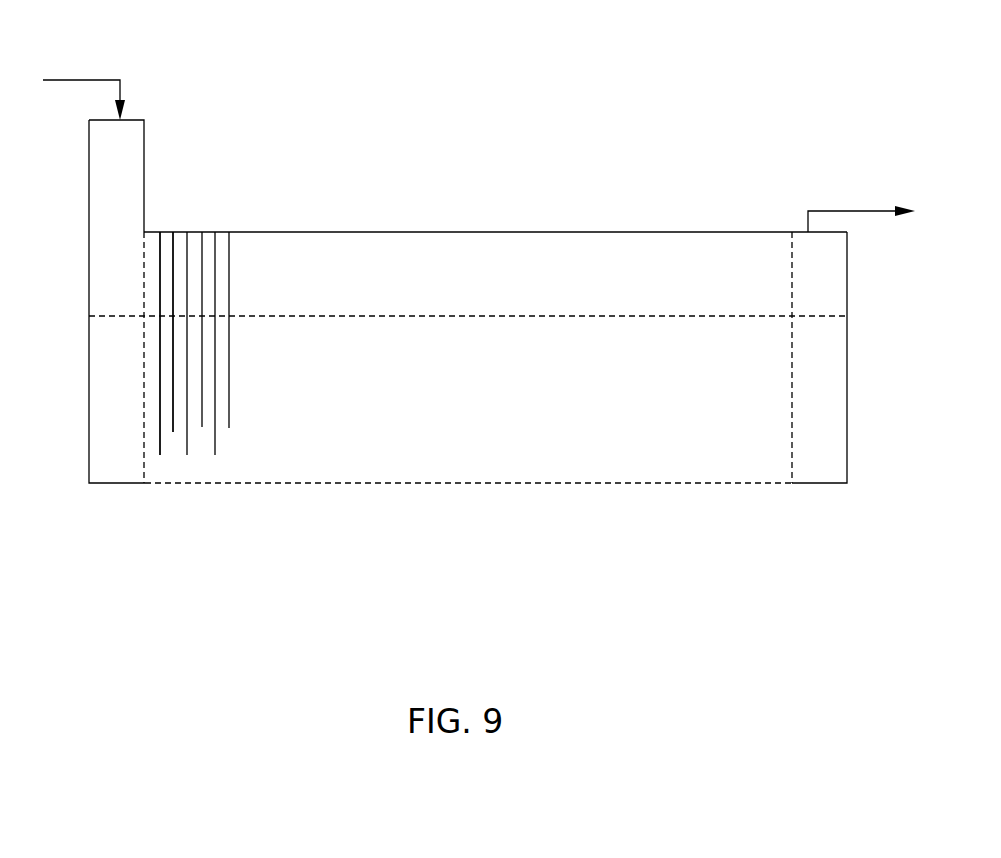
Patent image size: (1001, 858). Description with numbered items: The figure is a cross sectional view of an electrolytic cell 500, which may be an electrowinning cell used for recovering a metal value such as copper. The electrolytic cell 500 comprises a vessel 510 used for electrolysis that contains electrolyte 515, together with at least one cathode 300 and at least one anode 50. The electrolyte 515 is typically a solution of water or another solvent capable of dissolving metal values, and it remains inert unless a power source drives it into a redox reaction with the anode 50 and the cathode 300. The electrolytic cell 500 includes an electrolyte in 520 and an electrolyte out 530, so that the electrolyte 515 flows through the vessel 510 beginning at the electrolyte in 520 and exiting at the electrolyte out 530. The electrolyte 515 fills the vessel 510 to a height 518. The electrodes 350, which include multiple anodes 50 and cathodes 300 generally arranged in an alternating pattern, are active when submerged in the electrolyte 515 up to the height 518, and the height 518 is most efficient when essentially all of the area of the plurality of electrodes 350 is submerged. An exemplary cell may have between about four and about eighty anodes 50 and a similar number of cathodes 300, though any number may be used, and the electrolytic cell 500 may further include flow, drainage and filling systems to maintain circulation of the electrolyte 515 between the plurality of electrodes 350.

The electrolytic cell 500 is at (347, 160).
The vessel 510 is at (285, 228).
The electrolyte 515 is at (382, 447).
The height 518 is at (313, 307).
The electrolyte in 520 is at (73, 80).
The electrolyte out 530 is at (866, 208).
The plurality of electrodes 350 is at (243, 228).
The cathode 300 is at (172, 433).
The anode 50 is at (160, 462).